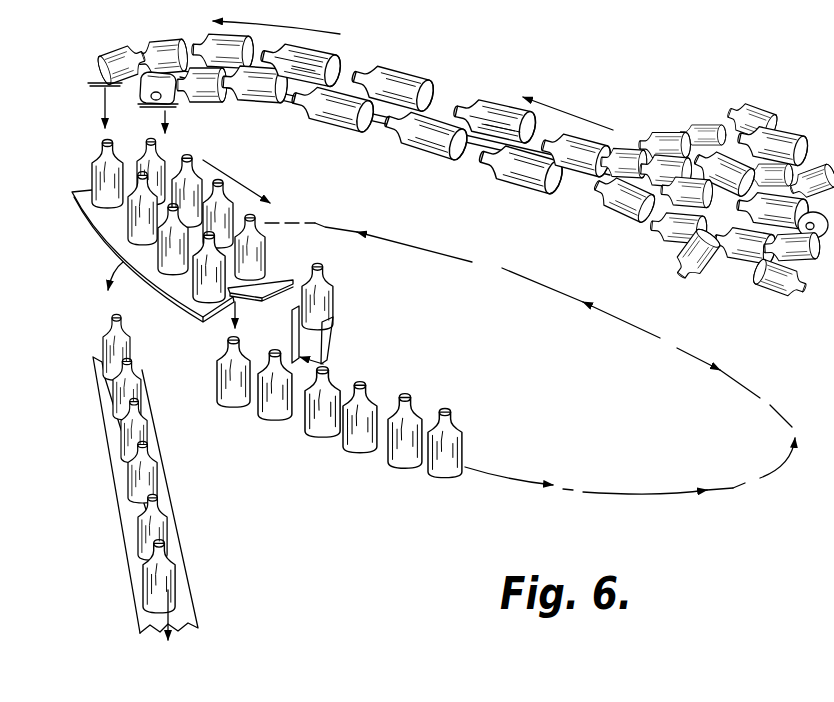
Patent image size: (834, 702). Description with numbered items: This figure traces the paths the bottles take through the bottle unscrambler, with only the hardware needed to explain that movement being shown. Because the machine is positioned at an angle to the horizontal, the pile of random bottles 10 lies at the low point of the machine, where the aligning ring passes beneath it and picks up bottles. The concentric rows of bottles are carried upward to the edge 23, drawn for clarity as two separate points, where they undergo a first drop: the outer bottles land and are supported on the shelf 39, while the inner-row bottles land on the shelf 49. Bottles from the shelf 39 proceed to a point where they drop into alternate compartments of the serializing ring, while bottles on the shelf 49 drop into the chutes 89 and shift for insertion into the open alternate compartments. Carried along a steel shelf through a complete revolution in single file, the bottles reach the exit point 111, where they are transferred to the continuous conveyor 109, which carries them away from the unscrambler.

The pile of random bottles 10 is at (773, 102).
The edge 23 is at (92, 83).
The shelf 39 is at (180, 285).
The shelf 49 is at (277, 280).
The chutes 89 is at (331, 328).
The continuous conveyor 109 is at (120, 483).
The exit point 111 is at (105, 283).